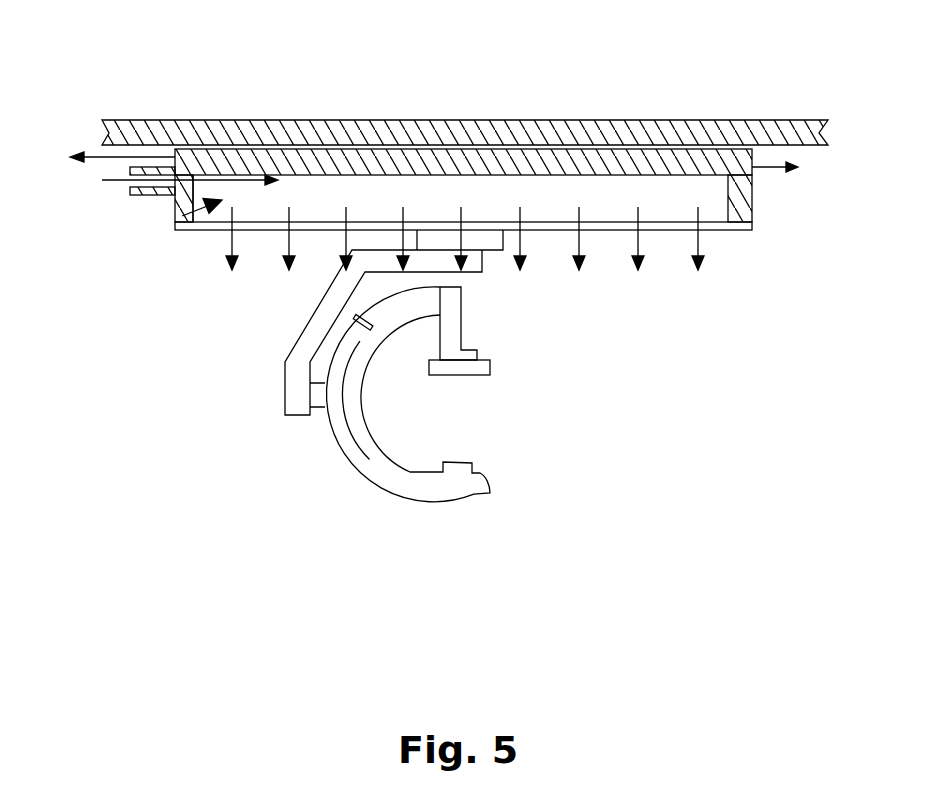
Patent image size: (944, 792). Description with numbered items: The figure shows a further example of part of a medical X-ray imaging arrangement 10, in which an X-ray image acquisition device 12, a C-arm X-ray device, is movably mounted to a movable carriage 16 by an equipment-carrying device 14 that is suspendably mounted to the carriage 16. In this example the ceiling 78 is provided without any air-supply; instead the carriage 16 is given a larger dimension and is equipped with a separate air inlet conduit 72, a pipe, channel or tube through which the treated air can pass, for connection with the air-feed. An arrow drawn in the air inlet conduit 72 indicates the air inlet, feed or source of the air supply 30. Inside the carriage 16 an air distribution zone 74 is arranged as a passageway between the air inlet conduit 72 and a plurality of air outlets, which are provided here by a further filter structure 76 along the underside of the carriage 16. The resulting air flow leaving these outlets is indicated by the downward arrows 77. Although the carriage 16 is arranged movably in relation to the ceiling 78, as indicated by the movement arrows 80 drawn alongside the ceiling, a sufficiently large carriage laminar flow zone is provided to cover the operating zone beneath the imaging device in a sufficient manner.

The medical X-ray imaging arrangement 10 is at (748, 346).
The X-ray image acquisition device 12 is at (308, 457).
The equipment-carrying device 14 is at (493, 240).
The movable carriage 16 is at (760, 250).
The air supply 30 is at (193, 201).
The air inlet conduit 72 is at (122, 186).
The air distribution zone 74 is at (493, 198).
The further filter structure 76 is at (660, 230).
The air flow arrows 77 is at (231, 247).
The ceiling 78 is at (792, 122).
The movement arrows 80 is at (95, 155).